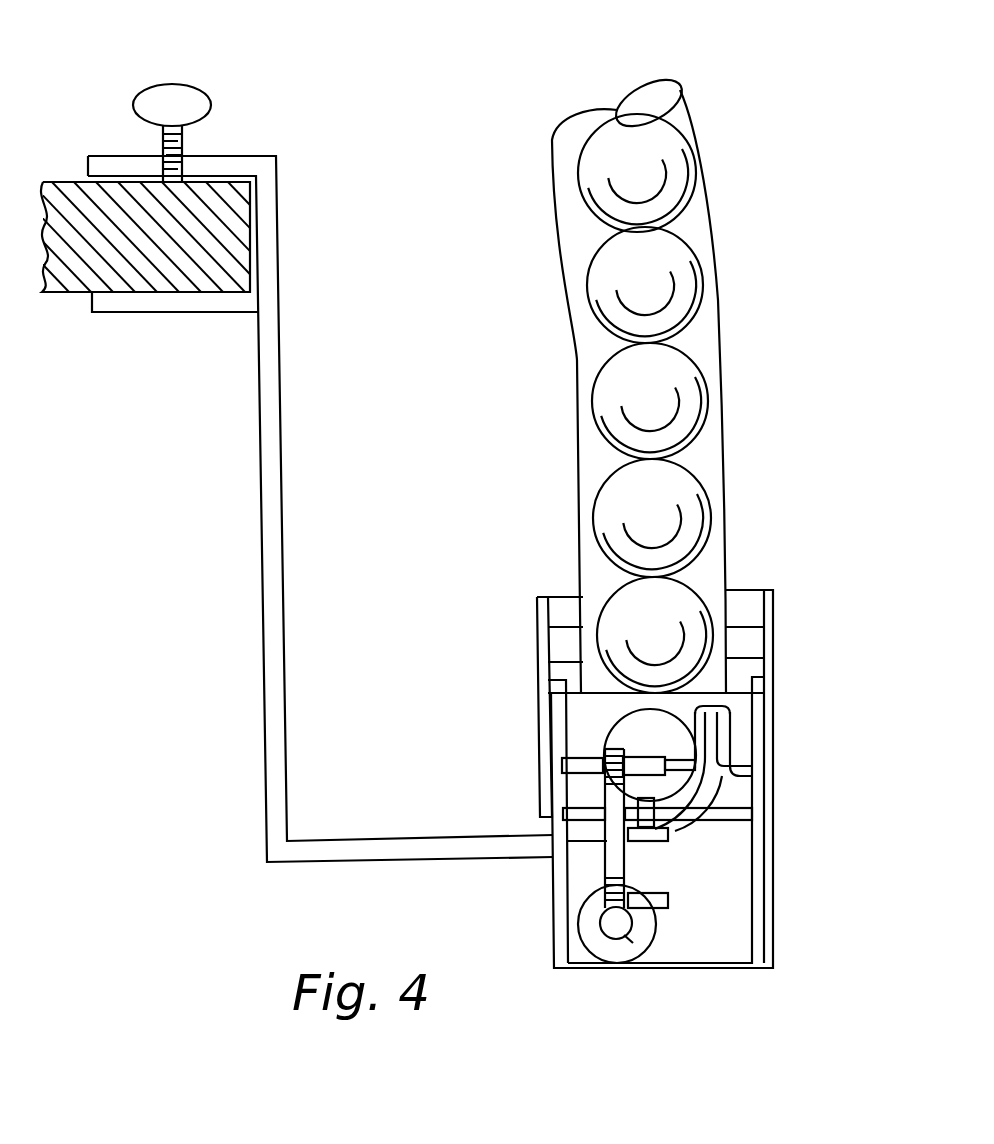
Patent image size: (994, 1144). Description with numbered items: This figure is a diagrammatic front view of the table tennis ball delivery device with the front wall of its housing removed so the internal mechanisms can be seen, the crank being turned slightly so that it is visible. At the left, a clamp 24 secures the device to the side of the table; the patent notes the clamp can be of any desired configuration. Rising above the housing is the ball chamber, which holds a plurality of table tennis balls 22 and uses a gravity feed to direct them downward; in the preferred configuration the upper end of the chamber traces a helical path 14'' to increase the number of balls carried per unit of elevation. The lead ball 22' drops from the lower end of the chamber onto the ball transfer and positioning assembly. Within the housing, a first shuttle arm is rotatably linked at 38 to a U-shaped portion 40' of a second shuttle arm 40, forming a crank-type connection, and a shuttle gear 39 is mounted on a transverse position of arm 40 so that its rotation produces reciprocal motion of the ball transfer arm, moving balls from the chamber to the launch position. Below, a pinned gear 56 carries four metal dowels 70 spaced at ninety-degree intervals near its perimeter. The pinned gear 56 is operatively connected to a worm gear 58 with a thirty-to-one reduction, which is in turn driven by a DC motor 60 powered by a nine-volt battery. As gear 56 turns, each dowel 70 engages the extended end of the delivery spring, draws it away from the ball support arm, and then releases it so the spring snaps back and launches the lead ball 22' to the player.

The helical path 14'' is at (674, 81).
The clamp 24 is at (262, 216).
The balls 22 is at (673, 391).
The lead ball 22' is at (730, 721).
The rotatable link 38 is at (712, 708).
The U-shaped portion 40' is at (765, 744).
The second shuttle arm 40 is at (751, 794).
The shuttle gear 39 is at (612, 750).
The metal dowels 70 is at (646, 755).
The pinned gear 56 is at (628, 858).
The DC motor 60 is at (657, 938).
The worm gear 58 is at (637, 968).